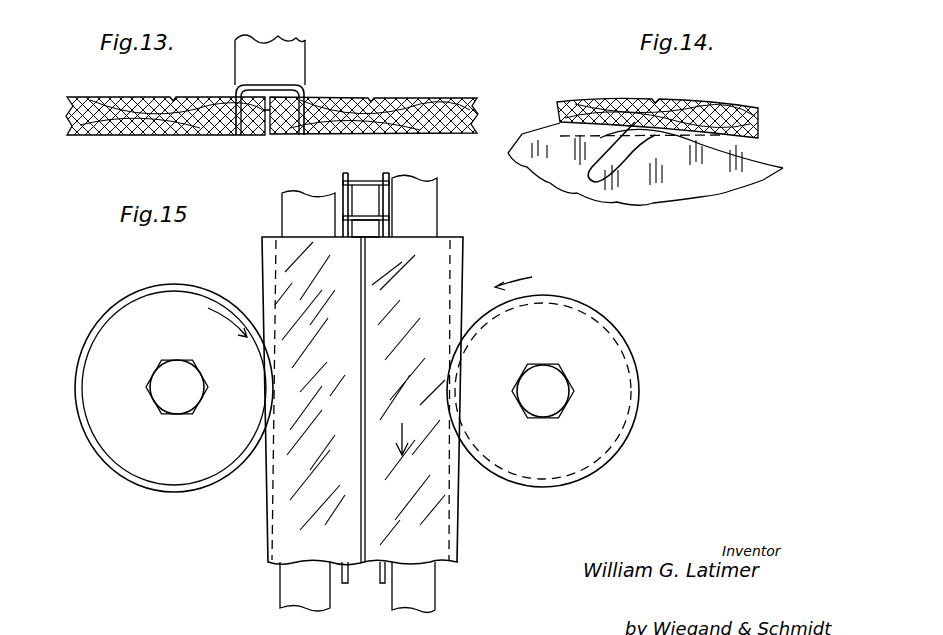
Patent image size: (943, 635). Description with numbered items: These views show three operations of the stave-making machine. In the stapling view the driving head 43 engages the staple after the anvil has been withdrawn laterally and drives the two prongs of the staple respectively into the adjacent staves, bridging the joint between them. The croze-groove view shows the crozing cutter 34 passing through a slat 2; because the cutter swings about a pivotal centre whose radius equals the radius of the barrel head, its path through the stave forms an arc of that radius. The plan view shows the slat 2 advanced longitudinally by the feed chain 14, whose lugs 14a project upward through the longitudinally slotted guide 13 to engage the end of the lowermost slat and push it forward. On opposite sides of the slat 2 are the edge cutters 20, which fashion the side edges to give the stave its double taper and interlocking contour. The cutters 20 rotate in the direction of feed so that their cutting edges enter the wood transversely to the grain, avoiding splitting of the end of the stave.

In FIG. 14, the slat 2 is at (757, 111).
In FIG. 15, the slat 2 is at (283, 540).
In FIG. 15, the longitudinally slotted guide 13 is at (397, 597).
In FIG. 15, the feed chain 14 is at (370, 182).
In FIG. 15, the lugs 14a is at (377, 238).
In FIG. 13, the edge cutters 20 is at (197, 129).
In FIG. 15, the edge cutters 20 is at (170, 478).
In FIG. 14, the crozing cutter 34 is at (728, 185).
In FIG. 13, the driving head 43 is at (298, 66).